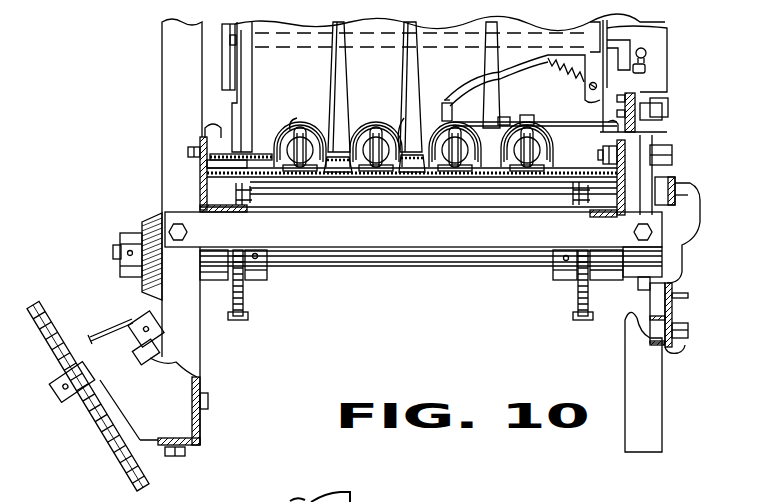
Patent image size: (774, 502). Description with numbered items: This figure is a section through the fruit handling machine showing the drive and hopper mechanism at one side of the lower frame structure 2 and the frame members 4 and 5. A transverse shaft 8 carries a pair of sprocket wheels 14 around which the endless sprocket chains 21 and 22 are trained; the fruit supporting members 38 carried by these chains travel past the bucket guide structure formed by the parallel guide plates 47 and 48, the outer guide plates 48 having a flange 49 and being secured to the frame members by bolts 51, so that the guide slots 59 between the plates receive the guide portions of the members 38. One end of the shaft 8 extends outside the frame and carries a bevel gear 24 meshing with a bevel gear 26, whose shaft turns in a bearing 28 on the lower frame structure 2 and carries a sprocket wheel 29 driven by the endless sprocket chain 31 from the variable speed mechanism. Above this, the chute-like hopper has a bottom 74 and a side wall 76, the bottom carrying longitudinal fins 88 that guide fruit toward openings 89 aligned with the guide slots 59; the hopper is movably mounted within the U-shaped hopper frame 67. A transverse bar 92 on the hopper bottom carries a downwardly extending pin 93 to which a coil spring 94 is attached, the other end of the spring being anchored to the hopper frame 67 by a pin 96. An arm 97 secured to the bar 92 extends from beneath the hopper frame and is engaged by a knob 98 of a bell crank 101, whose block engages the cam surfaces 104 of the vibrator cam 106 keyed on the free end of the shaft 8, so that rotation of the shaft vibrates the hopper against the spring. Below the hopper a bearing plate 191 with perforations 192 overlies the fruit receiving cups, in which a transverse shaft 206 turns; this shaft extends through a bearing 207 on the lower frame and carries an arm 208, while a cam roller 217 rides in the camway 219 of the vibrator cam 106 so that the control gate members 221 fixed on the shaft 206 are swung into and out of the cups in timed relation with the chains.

The lower frame structure 2 is at (168, 92).
The frame member 4 is at (203, 180).
The frame member 5 is at (625, 175).
The transverse shaft 8 is at (405, 257).
The sprocket wheels 14 is at (243, 298).
The endless sprocket chain 21 is at (245, 200).
The endless sprocket chain 22 is at (575, 200).
The bevel gear 24 is at (145, 223).
The bevel gear 26 is at (140, 318).
The bearing 28 is at (100, 340).
The sprocket wheel 29 is at (70, 400).
The endless sprocket chain 31 is at (112, 452).
The fruit supporting members 38 is at (300, 138).
The guide plates 47 is at (355, 176).
The guide plates 48 is at (200, 170).
The flange 49 is at (206, 133).
The bolts 51 is at (190, 152).
The guide slots 59 is at (300, 168).
The hopper frame 67 is at (230, 68).
The bottom 74 is at (392, 68).
The side wall 76 is at (236, 80).
The fins 88 is at (340, 80).
The openings 89 is at (286, 127).
The transverse bar 92 is at (233, 40).
The pin 93 is at (527, 56).
The coil spring 94 is at (565, 70).
The pin 96 is at (590, 87).
The arm 97 is at (636, 35).
The knob 98 is at (647, 53).
The bell crank 101 is at (646, 69).
The cam surfaces 104 is at (695, 198).
The vibrator cam 106 is at (680, 275).
The bearing plate 191 is at (447, 116).
The perforations 192 is at (495, 122).
The transverse shaft 206 is at (522, 116).
The bearing 207 is at (668, 112).
The arm 208 is at (660, 103).
The cam roller 217 is at (676, 186).
The camway 219 is at (679, 338).
The control gate members 221 is at (290, 130).